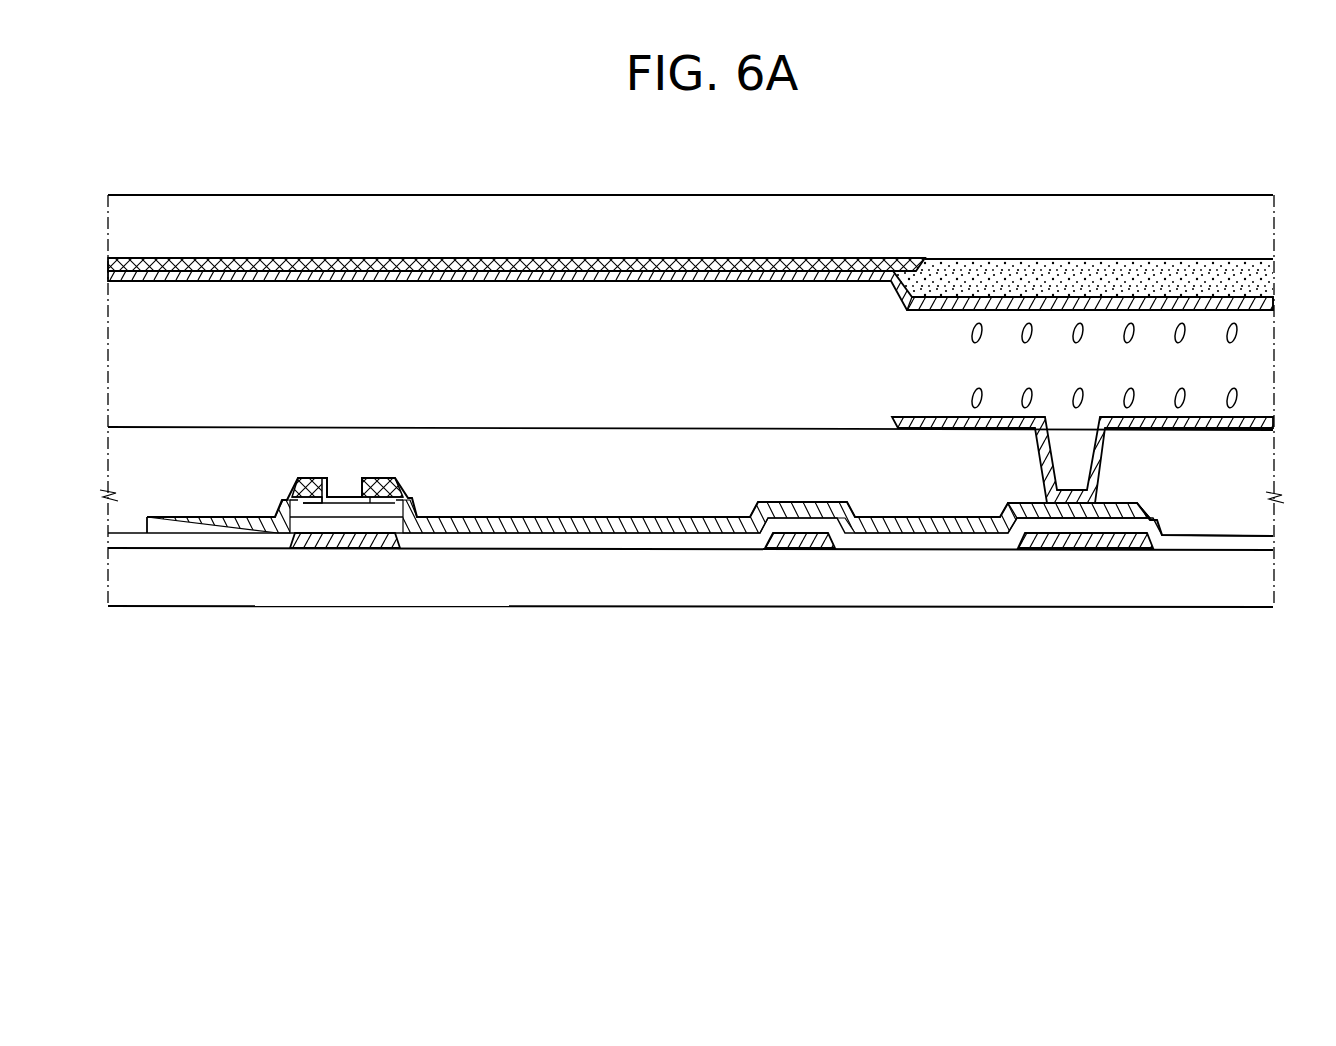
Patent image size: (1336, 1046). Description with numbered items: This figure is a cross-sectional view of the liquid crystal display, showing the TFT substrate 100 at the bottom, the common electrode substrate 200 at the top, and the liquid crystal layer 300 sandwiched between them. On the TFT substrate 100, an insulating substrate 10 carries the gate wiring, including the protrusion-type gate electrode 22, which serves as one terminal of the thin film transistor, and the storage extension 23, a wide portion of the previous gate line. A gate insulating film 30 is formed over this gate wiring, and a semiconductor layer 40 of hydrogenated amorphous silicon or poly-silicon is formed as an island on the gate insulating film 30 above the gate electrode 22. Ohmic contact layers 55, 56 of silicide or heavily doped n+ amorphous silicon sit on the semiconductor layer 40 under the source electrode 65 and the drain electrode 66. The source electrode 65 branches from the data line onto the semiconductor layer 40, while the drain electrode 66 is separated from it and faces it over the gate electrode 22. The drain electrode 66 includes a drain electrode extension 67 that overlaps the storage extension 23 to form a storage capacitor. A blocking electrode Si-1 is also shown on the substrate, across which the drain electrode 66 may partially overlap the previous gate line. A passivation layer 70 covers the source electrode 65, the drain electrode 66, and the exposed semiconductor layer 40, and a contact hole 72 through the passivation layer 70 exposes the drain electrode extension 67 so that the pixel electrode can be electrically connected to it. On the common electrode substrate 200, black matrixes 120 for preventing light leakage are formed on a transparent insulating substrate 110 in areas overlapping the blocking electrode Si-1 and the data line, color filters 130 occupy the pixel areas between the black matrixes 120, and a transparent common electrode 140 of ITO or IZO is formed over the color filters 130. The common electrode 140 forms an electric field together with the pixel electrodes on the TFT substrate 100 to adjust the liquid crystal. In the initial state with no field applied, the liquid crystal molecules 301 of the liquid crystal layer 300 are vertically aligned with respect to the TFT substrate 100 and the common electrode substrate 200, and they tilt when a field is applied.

The TFT substrate 100 is at (1283, 432).
The common electrode substrate 200 is at (1283, 197).
The liquid crystal layer 300 is at (1283, 309).
The liquid crystal molecules 301 is at (1230, 390).
The insulating substrate 110 is at (778, 240).
The black matrixes 120 is at (692, 268).
The color filters 130 is at (1003, 262).
The common electrode 140 is at (1090, 298).
The contact hole 72 is at (1079, 422).
The insulating substrate 10 is at (516, 588).
The gate electrode 22 is at (345, 548).
The storage extension 23 is at (1080, 550).
The gate insulating film 30 is at (577, 530).
The semiconductor layer 40 is at (318, 503).
The ohmic contact layer 55 is at (305, 503).
The ohmic contact layer 56 is at (368, 500).
The source electrode 65 is at (284, 498).
The drain electrode 66 is at (392, 503).
The drain electrode extension 67 is at (1030, 512).
The passivation layer 70 is at (661, 485).
The blocking electrode Si-1 is at (800, 550).